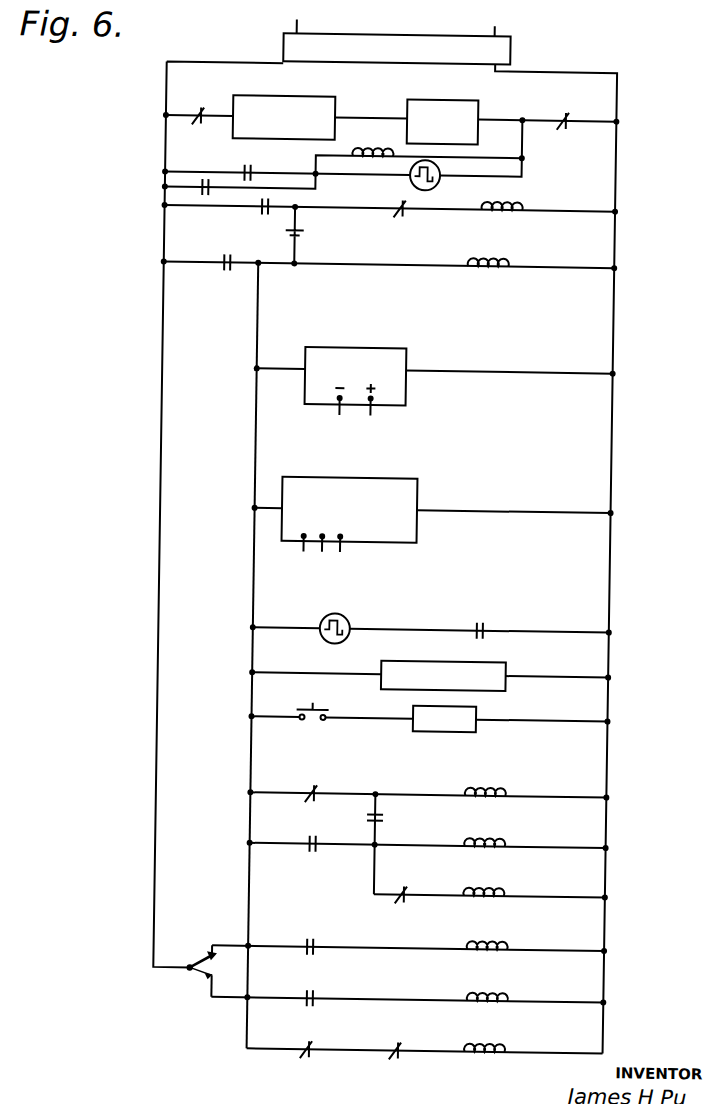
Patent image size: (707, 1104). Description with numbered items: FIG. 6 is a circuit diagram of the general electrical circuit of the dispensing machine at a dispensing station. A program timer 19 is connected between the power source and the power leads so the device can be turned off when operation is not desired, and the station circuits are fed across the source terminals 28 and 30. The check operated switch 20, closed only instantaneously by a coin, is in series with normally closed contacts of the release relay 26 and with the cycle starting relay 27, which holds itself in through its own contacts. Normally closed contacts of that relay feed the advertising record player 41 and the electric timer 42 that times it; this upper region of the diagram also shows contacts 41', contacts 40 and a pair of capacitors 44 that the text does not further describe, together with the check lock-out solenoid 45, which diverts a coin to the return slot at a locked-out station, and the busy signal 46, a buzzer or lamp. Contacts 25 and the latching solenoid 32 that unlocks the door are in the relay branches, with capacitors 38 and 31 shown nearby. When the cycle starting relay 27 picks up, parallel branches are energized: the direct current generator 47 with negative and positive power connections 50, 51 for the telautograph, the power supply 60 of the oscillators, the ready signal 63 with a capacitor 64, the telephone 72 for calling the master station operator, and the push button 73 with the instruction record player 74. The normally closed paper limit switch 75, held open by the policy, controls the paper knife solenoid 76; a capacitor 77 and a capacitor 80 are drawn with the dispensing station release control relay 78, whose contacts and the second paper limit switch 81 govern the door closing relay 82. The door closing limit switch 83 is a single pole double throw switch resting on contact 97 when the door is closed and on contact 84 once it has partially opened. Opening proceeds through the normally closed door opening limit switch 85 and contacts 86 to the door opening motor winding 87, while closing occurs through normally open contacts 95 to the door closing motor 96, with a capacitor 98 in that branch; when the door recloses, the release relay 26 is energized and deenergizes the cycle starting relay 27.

The program timer 19 is at (503, 49).
The terminal 28 is at (160, 72).
The terminal 30 is at (611, 78).
The switch contacts 41' is at (197, 106).
The advertising record player 41 is at (284, 101).
The electric timer 42 is at (440, 104).
The switch contacts 40 is at (558, 110).
The capacitors 44 is at (242, 167).
The check lock-out solenoid 45 is at (372, 143).
The busy signal 46 is at (405, 182).
The check operated switch 20 is at (257, 214).
The capacitor 38 is at (299, 240).
The switch contacts 25 is at (397, 217).
The cycle starting relay 27 is at (515, 210).
The capacitor 31 is at (223, 275).
The latching solenoid 32 is at (491, 271).
The direct current generator 47 is at (375, 348).
The negative power connection 50 is at (338, 416).
The positive power connection 51 is at (370, 416).
The power supply 60 is at (409, 496).
The ready signal 63 is at (346, 619).
The capacitor 64 is at (483, 619).
The telephone 72 is at (492, 669).
The push button 73 is at (306, 723).
The instruction record player 74 is at (446, 731).
The paper limit switch 75 is at (322, 787).
The paper knife solenoid 76 is at (498, 783).
The capacitor 77 is at (389, 818).
The dispensing station release control relay 78 is at (496, 837).
The capacitor 80 is at (320, 853).
The second paper limit switch 81 is at (410, 888).
The door closing relay 82 is at (500, 892).
The normally open contacts 95 is at (319, 938).
The door closing motor 96 is at (501, 944).
The capacitor 98 is at (320, 994).
The release relay 26 is at (502, 991).
The door closing limit switch 83 is at (206, 963).
The contact 84 is at (218, 952).
The contact 97 is at (216, 980).
The door opening limit switch 85 is at (316, 1058).
The switch contacts 86 is at (404, 1057).
The door opening motor winding 87 is at (478, 1057).